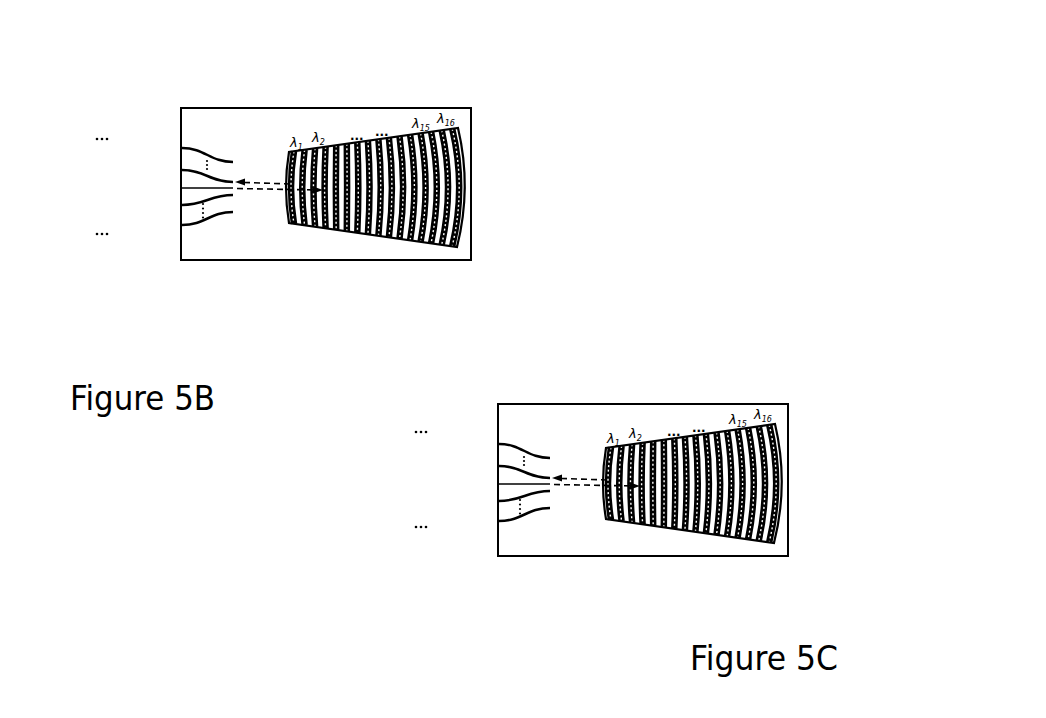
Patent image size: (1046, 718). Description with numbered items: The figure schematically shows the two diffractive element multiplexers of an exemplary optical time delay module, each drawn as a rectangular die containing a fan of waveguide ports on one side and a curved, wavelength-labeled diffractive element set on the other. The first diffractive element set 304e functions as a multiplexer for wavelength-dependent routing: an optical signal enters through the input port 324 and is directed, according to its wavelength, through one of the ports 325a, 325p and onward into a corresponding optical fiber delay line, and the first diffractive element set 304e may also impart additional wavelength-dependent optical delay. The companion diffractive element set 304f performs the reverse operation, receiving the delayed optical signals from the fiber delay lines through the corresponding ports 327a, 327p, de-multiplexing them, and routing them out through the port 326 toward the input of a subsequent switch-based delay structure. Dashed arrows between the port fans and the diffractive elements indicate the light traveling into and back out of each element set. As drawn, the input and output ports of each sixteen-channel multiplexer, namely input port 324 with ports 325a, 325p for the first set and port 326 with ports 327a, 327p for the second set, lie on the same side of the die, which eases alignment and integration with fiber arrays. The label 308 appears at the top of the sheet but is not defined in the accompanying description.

In FIG. 5B, the first diffractive element set 304e is at (287, 108).
In FIG. 5C, the diffractive element set 304f is at (645, 404).
In FIG. 5B, the optical processing module 308 is at (721, 13).
In FIG. 5B, the input port 324 is at (181, 188).
In FIG. 5B, the port 325a is at (181, 148).
In FIG. 5B, the port 325p is at (181, 226).
In FIG. 5C, the port 326 is at (498, 484).
In FIG. 5C, the port 327a is at (498, 444).
In FIG. 5C, the port 327p is at (498, 522).